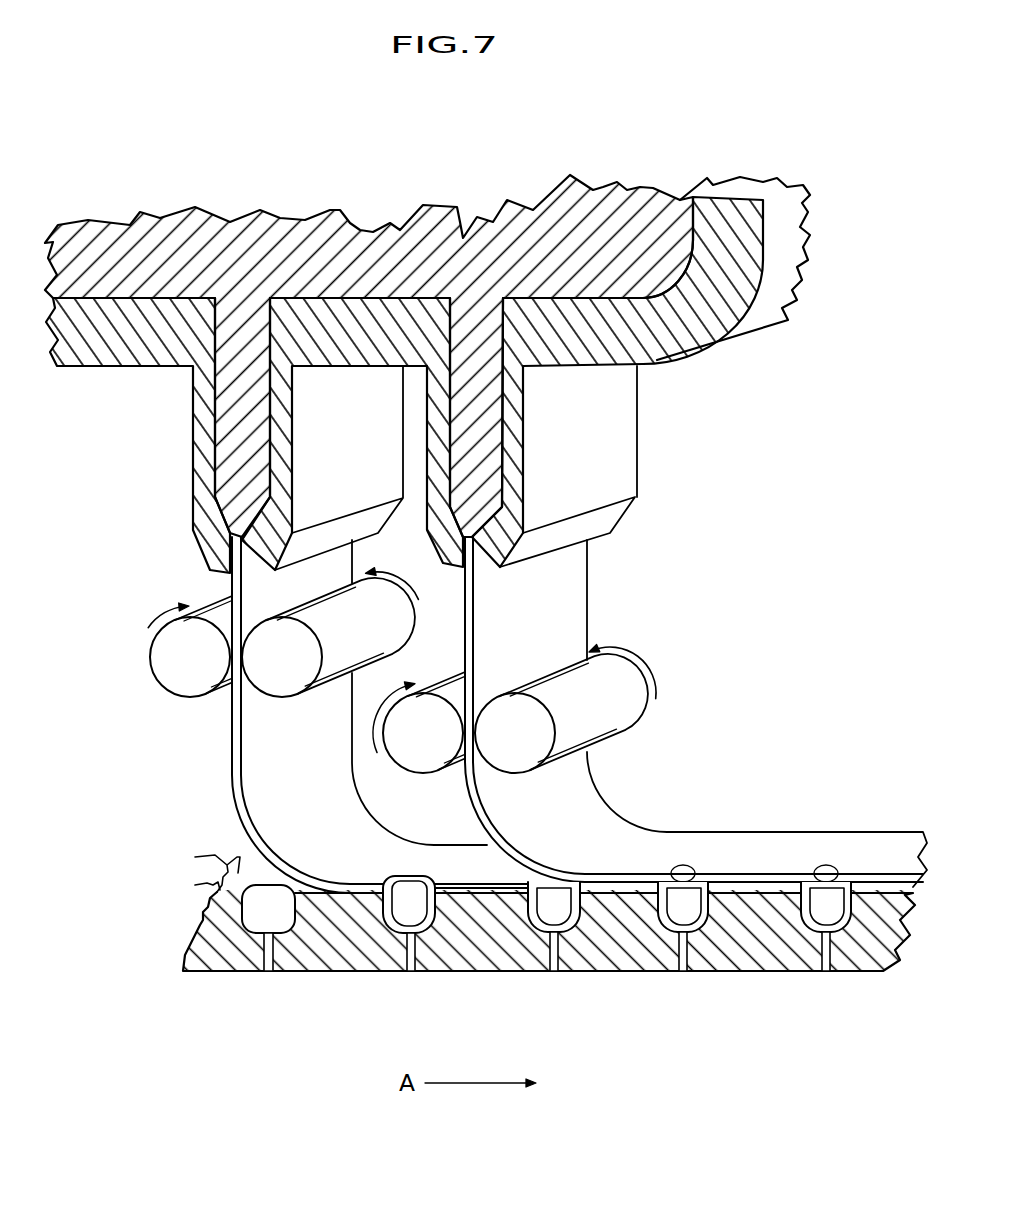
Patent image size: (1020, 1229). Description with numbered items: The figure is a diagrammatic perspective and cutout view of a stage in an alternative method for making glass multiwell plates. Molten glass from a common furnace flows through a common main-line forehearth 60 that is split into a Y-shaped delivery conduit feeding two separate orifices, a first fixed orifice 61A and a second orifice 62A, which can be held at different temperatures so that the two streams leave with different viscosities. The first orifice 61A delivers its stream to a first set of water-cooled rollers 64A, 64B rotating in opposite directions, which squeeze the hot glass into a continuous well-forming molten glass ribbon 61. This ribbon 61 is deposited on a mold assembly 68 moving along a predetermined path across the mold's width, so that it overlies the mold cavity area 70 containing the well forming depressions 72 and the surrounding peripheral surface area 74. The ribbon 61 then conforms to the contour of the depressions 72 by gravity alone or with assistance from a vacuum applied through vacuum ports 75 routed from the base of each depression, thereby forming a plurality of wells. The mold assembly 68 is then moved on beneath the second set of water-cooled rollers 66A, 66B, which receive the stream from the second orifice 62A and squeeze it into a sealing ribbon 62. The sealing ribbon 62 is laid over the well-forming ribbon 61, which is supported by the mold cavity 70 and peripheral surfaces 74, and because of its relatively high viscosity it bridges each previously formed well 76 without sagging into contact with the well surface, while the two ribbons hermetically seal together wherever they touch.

The main-line forehearth 60 is at (322, 200).
The well-forming molten glass ribbon 61 is at (332, 572).
The first fixed orifice 61A is at (206, 553).
The sealing ribbon 62 is at (572, 625).
The second orifice 62A is at (503, 576).
The first water-cooled roller 64A is at (170, 646).
The second water-cooled roller 64B is at (347, 632).
The third water-cooled roller 66A is at (415, 733).
The fourth water-cooled roller 66B is at (582, 708).
The mold assembly 68 is at (746, 952).
The mold cavity area 70 is at (238, 876).
The well forming depression 72 is at (262, 908).
The peripheral surface area 74 is at (200, 885).
The vacuum ports 75 is at (410, 977).
The well 76 is at (382, 975).